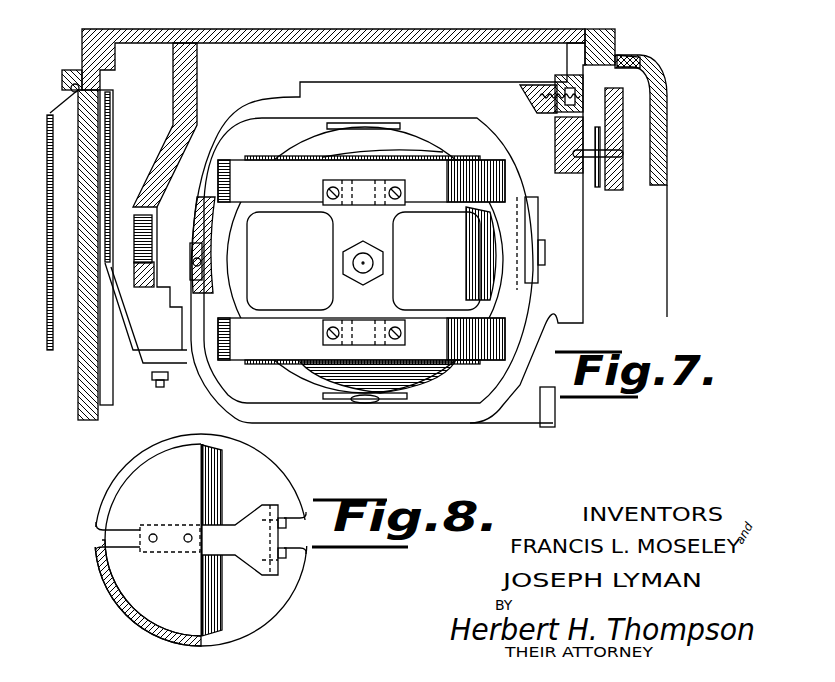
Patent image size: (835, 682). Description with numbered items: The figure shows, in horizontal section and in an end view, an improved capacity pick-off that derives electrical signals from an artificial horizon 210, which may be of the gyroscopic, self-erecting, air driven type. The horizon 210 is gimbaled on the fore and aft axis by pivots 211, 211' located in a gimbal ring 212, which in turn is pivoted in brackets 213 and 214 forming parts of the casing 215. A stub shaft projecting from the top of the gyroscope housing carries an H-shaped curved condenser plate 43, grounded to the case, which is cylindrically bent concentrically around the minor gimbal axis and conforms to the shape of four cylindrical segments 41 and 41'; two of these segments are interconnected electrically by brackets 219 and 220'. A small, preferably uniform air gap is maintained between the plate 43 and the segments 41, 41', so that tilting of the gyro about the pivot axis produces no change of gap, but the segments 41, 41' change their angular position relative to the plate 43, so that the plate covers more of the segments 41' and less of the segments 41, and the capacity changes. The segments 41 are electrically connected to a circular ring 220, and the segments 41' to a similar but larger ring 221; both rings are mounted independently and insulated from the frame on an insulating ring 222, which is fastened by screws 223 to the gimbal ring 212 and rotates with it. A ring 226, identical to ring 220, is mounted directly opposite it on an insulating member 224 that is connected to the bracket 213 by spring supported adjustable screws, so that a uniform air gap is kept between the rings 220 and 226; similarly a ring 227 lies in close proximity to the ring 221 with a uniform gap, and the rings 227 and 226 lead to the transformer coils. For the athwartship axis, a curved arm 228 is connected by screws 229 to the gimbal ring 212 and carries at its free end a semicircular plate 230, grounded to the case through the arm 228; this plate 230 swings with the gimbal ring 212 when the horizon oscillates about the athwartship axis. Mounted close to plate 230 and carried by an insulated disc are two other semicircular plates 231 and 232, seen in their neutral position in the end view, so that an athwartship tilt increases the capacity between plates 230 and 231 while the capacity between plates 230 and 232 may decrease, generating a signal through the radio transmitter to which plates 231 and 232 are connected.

In FIG. 7, the cylindrical segment 41 is at (361, 261).
In FIG. 7, the cylindrical segment 41' is at (248, 263).
In FIG. 7, the H-shaped curved condenser plate 43 is at (400, 236).
In FIG. 7, the artificial horizon 210 is at (363, 261).
In FIG. 7, the pivot 211 is at (367, 106).
In FIG. 7, the pivot 211' is at (378, 424).
In FIG. 7, the gimbal ring 212 is at (423, 90).
In FIG. 7, the bracket 213 is at (668, 258).
In FIG. 7, the bracket 214 is at (155, 172).
In FIG. 7, the casing 215 is at (328, 42).
In FIG. 7, the bracket 219 is at (505, 186).
In FIG. 7, the circular ring 220 is at (647, 144).
In FIG. 7, the bracket 220' is at (250, 245).
In FIG. 7, the ring 221 is at (573, 40).
In FIG. 7, the insulating ring 222 is at (557, 80).
In FIG. 7, the screw 223 is at (515, 98).
In FIG. 7, the insulating member 224 is at (628, 112).
In FIG. 7, the ring 226 is at (625, 115).
In FIG. 7, the ring 227 is at (618, 55).
In FIG. 7, the curved arm 228 is at (128, 352).
In FIG. 8, the curved arm 228 is at (267, 507).
In FIG. 7, the screw 229 is at (155, 387).
In FIG. 8, the screw 229 is at (283, 558).
In FIG. 7, the semicircular plate 230 is at (110, 115).
In FIG. 8, the semicircular plate 230 is at (201, 540).
In FIG. 8, the semicircular plate 231 is at (241, 540).
In FIG. 7, the semicircular plate 232 is at (82, 376).
In FIG. 8, the semicircular plate 232 is at (182, 593).